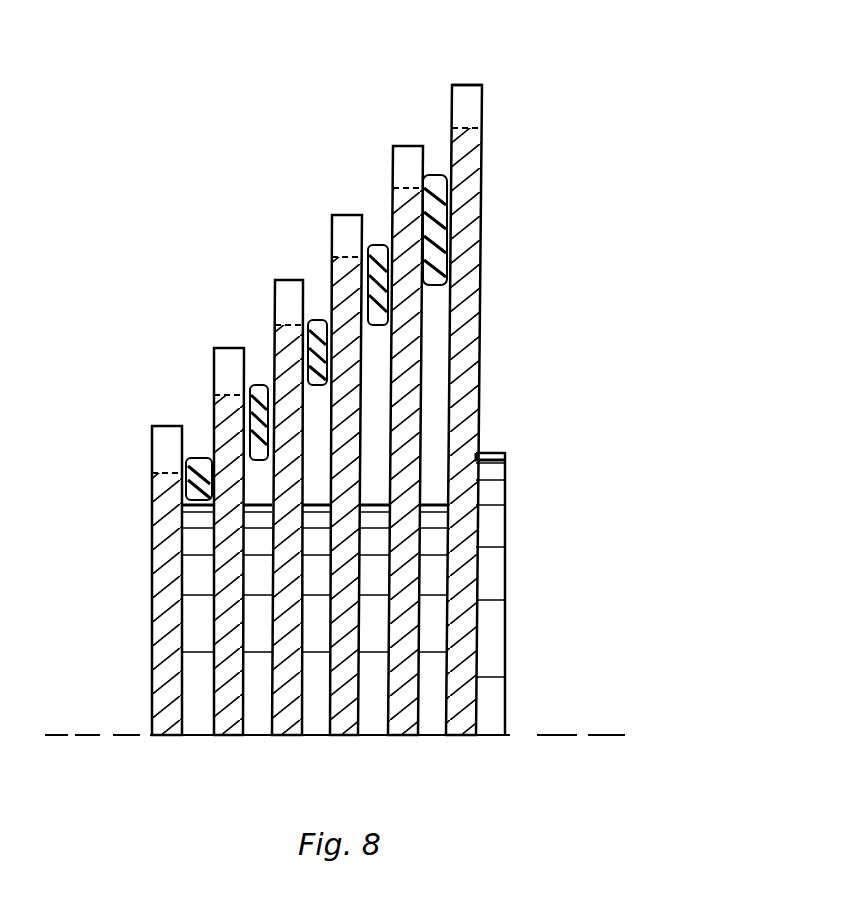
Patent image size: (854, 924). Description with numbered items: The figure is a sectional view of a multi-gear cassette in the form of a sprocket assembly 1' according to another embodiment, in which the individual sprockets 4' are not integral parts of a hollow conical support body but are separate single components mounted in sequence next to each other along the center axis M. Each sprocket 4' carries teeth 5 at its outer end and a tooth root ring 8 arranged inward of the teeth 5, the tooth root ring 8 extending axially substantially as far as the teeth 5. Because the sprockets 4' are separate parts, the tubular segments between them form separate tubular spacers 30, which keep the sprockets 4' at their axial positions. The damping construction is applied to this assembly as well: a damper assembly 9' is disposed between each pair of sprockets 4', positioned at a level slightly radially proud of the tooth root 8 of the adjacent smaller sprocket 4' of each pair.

The sprocket assembly 1' is at (379, 380).
The sprocket 4' is at (371, 410).
The teeth 5 is at (480, 84).
The tooth root ring 8 is at (467, 127).
The damper assembly 9' is at (316, 271).
The tubular spacer 30 is at (372, 679).
The center axis M is at (117, 735).